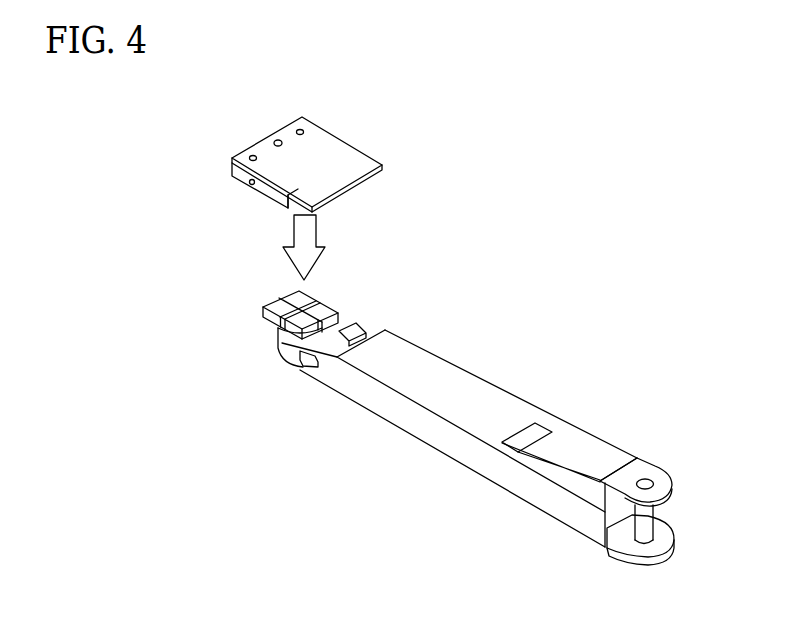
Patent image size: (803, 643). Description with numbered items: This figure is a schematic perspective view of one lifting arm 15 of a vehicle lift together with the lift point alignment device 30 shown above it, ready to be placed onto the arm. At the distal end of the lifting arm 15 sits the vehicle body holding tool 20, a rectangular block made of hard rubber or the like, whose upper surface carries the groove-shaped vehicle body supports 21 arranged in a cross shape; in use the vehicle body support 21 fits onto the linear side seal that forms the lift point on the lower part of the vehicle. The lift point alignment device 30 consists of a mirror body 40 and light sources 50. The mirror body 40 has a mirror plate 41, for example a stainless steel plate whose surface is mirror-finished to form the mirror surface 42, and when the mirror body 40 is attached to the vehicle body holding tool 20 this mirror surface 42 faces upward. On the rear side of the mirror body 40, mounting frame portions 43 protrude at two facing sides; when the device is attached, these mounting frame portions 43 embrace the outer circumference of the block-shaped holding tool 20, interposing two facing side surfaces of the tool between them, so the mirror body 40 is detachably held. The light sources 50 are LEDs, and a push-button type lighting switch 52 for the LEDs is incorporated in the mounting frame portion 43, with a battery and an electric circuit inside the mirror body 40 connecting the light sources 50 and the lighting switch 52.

The lifting arm 15 is at (442, 453).
The vehicle body holding tool 20 is at (290, 308).
The vehicle body support 21 is at (308, 288).
The lift point alignment device 30 is at (303, 161).
The mirror body 40 is at (268, 193).
The mirror plate 41 is at (362, 180).
The mirror surface 42 is at (353, 160).
The mounting frame portion 43 is at (278, 196).
The light source 50 is at (277, 140).
The lighting switch 52 is at (249, 184).